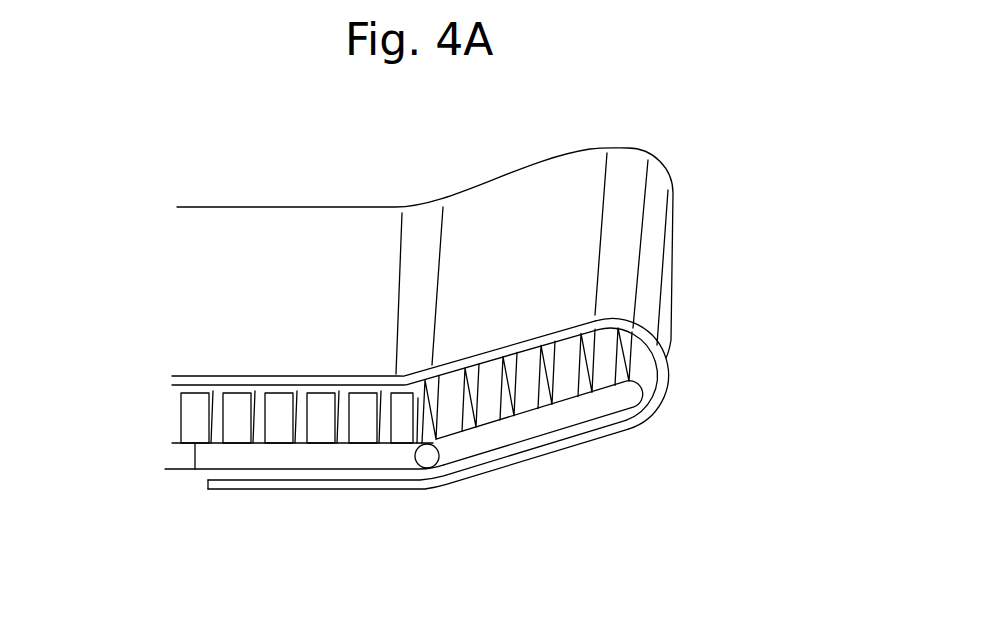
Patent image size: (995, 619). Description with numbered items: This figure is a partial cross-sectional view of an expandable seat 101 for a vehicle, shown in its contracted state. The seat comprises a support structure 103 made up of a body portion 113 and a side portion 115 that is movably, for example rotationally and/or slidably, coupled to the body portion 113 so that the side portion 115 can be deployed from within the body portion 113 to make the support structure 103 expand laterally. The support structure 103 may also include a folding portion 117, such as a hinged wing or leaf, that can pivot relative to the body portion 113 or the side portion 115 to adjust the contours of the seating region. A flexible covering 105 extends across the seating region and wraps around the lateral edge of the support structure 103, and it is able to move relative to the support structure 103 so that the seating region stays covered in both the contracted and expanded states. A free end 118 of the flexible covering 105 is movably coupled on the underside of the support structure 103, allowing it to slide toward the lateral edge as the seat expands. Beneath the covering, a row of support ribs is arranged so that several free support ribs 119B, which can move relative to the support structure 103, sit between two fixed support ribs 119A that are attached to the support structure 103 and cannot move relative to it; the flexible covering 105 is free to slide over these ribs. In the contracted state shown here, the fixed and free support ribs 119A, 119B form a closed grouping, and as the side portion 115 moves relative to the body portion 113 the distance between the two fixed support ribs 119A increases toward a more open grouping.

The expandable seat 101 is at (722, 140).
The support structure 103 is at (610, 405).
The flexible covering 105 is at (507, 213).
The body portion 113 is at (182, 460).
The side portion 115 is at (206, 465).
The folding portion 117 is at (548, 425).
The free end 118 is at (204, 500).
The fixed support rib 119A is at (195, 415).
The free support rib 119B is at (285, 437).